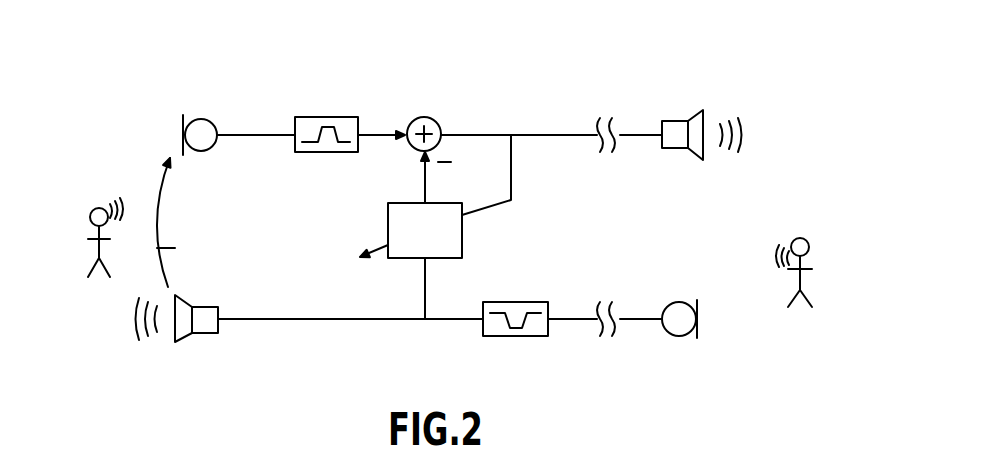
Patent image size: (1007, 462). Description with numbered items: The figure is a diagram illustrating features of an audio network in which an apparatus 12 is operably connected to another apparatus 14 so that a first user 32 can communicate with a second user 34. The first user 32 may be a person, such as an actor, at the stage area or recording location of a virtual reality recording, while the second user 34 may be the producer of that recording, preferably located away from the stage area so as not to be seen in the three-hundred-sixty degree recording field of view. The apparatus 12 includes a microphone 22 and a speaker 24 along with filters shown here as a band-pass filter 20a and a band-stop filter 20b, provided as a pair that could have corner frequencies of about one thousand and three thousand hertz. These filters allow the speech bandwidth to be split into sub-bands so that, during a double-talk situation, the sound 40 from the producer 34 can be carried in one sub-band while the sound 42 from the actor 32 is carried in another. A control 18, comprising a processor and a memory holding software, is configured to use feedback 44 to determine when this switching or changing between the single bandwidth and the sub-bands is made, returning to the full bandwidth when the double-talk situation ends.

The apparatus 12 is at (512, 97).
The other apparatus 14 is at (688, 95).
The control 18 is at (462, 232).
The band-pass filter 20a is at (325, 117).
The band-stop filter 20b is at (517, 337).
The microphone 22 is at (205, 120).
The speaker 24 is at (200, 335).
The first user 32 is at (91, 211).
The second user 34 is at (804, 237).
The sound from the producer 40 is at (782, 265).
The sound from the actor 42 is at (121, 204).
The feedback 44 is at (157, 203).